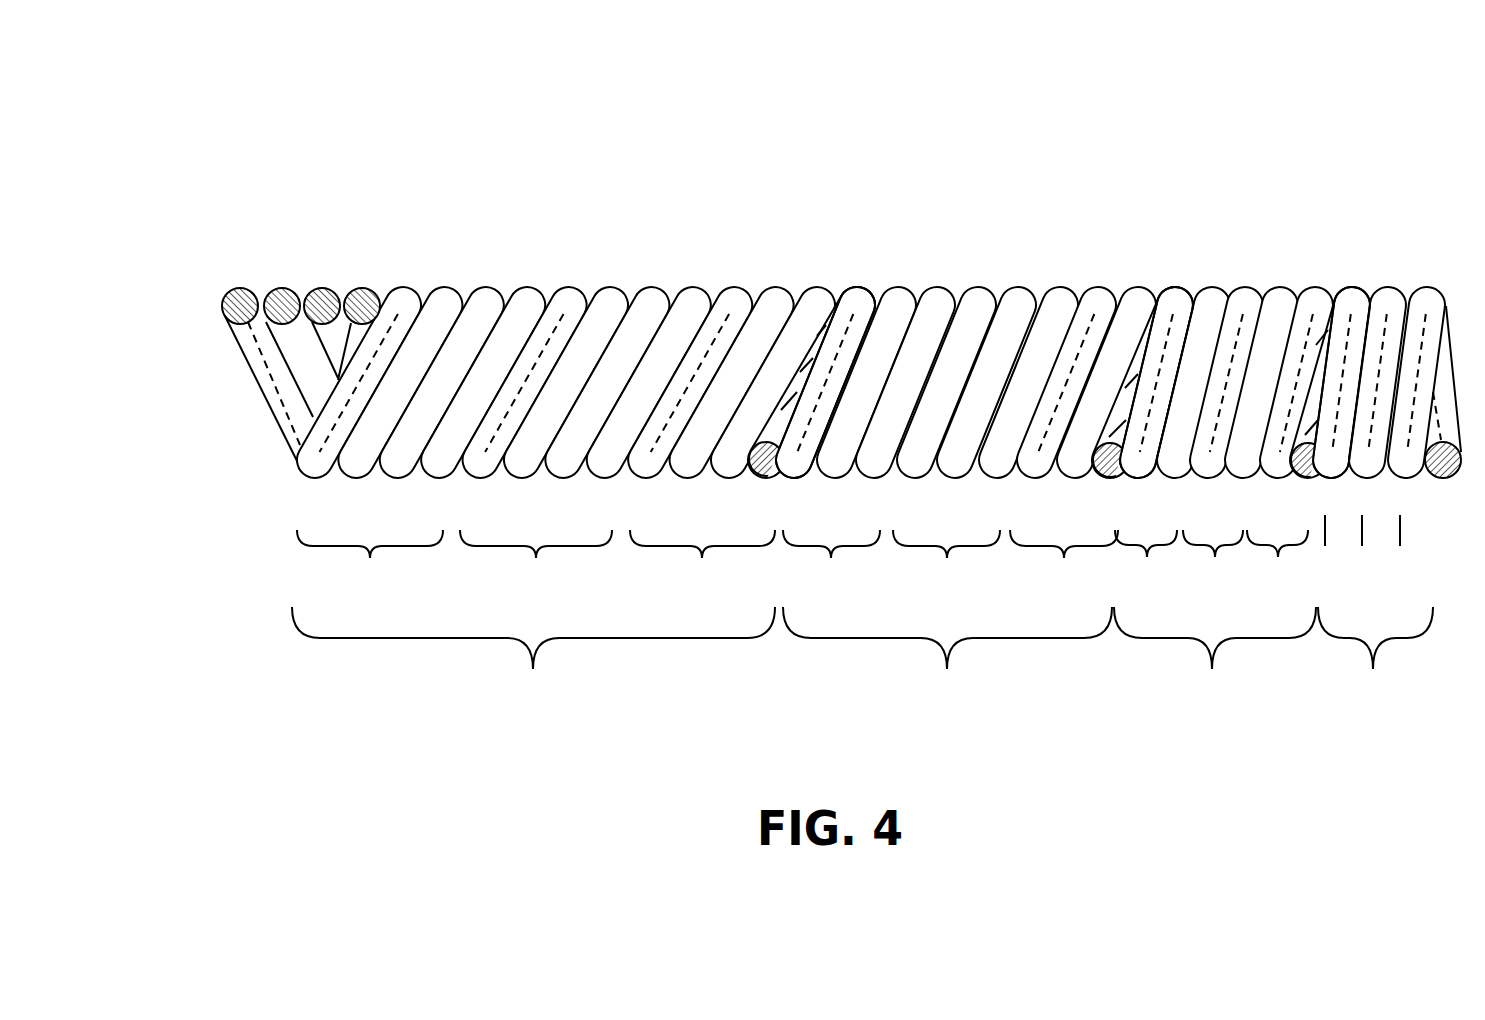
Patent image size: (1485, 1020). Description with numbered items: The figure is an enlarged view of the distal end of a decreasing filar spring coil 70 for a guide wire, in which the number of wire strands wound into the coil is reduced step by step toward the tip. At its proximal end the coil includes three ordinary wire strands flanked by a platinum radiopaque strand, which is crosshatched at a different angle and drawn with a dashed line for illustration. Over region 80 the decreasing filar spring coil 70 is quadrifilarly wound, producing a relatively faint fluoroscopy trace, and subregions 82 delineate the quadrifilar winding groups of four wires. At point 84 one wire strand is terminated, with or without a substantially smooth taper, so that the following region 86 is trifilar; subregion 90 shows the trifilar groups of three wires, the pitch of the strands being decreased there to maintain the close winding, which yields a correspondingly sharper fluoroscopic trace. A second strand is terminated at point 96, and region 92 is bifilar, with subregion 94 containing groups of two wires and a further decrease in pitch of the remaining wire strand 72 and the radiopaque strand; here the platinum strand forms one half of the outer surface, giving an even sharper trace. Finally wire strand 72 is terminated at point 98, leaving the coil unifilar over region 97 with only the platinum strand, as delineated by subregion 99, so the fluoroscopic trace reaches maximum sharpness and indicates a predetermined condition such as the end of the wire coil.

The decreasing filar spring coil 70 is at (1240, 146).
The wire strand 72 is at (1305, 477).
The quadrifilar region 80 is at (533, 659).
The quadrifilar subregion 82 is at (536, 559).
The termination point of wire strand 76 84 is at (838, 290).
The trifilar region 86 is at (947, 659).
The trifilar subregion 90 is at (950, 559).
The bifilar region 92 is at (1215, 659).
The bifilar subregion 94 is at (1211, 559).
The termination point of wire strand 74 96 is at (1158, 290).
The unifilar region 97 is at (1375, 659).
The termination point of wire strand 72 98 is at (1335, 290).
The unifilar subregion 99 is at (1363, 551).